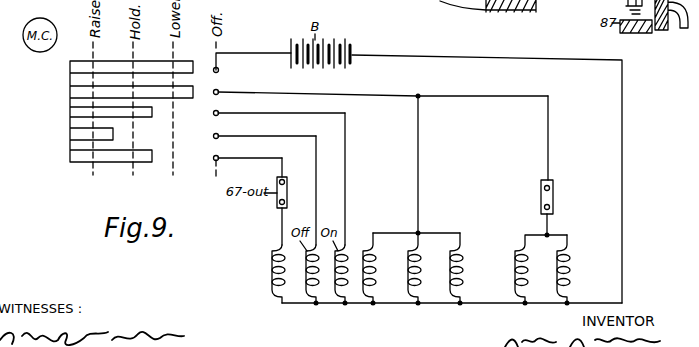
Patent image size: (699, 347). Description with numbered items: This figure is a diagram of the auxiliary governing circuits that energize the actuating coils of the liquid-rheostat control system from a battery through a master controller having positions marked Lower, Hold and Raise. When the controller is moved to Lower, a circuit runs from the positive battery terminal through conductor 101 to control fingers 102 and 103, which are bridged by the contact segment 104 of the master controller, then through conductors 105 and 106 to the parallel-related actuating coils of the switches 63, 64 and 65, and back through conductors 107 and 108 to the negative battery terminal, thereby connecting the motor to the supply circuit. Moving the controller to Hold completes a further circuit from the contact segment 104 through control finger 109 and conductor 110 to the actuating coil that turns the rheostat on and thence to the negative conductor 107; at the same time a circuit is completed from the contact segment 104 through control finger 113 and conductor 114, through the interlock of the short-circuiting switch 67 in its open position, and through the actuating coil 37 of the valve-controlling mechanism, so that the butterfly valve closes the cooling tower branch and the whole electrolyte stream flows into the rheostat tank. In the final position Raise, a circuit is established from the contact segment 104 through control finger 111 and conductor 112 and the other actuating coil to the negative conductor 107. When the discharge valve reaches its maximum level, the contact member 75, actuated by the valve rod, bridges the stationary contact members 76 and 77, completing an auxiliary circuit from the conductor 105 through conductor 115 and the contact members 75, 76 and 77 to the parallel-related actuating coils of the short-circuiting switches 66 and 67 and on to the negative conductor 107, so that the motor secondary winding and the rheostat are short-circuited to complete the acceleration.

The contact segment 104 is at (73, 87).
The conductor 101 is at (258, 53).
The control finger 102 is at (219, 70).
The control finger 103 is at (219, 91).
The conductor 105 is at (373, 95).
The conductor 106 is at (418, 131).
The negative conductor 107 is at (498, 303).
The conductor 108 is at (624, 97).
The control finger 109 is at (219, 112).
The conductor 110 is at (346, 131).
The control finger 111 is at (219, 135).
The conductor 112 is at (270, 138).
The control finger 113 is at (219, 157).
The conductor 114 is at (262, 160).
The conductor 115 is at (487, 96).
The actuating coil 37 is at (274, 265).
The switch 63 is at (381, 267).
The switch 64 is at (406, 268).
The switch 65 is at (456, 270).
The short-circuiting switch 66 is at (517, 268).
The short-circuiting switch 67 is at (563, 264).
The contact member 75 is at (553, 195).
The stationary contact member 76 is at (541, 187).
The stationary contact member 77 is at (541, 207).